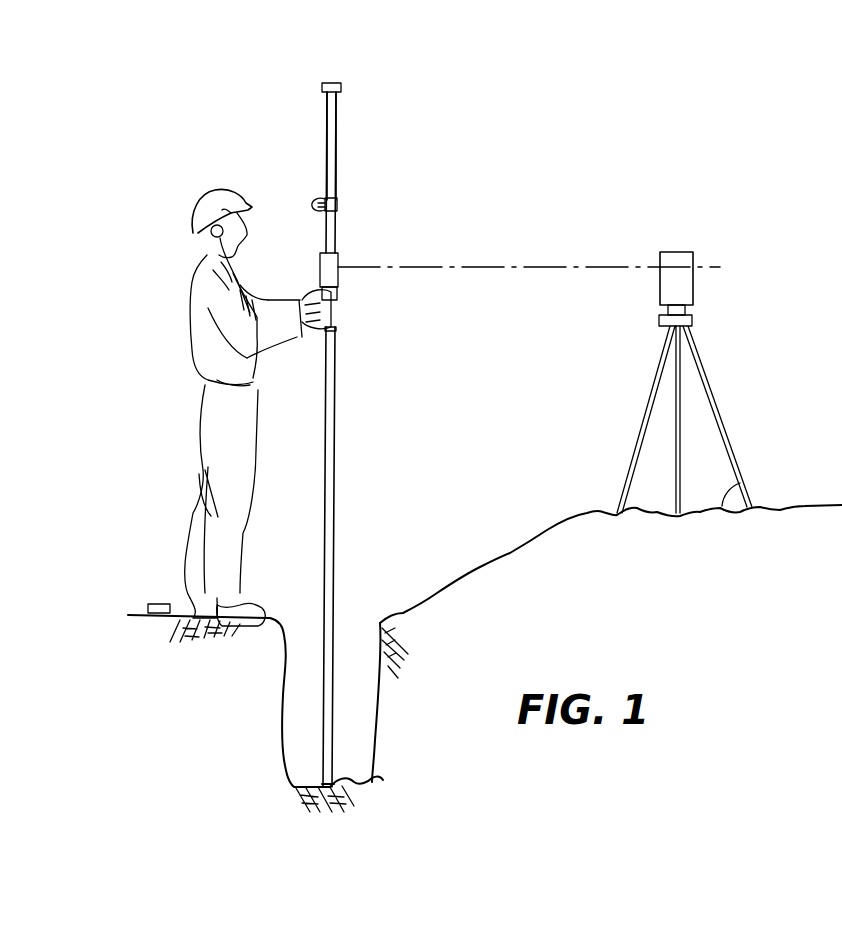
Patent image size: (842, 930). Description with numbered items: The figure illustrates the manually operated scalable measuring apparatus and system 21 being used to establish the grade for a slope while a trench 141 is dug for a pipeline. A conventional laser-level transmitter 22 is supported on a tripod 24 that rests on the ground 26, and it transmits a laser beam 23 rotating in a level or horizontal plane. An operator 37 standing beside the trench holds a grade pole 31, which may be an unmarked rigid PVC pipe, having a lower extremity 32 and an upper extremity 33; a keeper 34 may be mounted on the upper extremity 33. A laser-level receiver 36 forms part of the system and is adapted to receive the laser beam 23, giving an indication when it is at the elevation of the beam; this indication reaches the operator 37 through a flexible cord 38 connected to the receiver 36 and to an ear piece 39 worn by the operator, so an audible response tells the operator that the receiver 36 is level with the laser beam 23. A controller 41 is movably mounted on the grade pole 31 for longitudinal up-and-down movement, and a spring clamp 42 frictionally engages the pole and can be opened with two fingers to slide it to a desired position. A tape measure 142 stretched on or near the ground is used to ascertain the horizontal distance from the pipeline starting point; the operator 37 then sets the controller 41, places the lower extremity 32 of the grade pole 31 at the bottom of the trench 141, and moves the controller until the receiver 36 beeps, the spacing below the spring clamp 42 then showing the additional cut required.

The scalable measuring apparatus and system 21 is at (445, 240).
The laser-level transmitter 22 is at (672, 250).
The laser beam 23 is at (512, 265).
The tripod 24 is at (717, 390).
The ground 26 is at (746, 482).
The grade pole 31 is at (338, 430).
The lower extremity 32 is at (373, 774).
The upper extremity 33 is at (337, 100).
The keeper 34 is at (322, 87).
The laser-level receiver 36 is at (340, 265).
The operator 37 is at (198, 305).
The flexible cord 38 is at (273, 298).
The ear piece 39 is at (210, 238).
The controller 41 is at (338, 290).
The spring clamp 42 is at (337, 207).
The trench 141 is at (280, 727).
The tape measure 142 is at (150, 603).